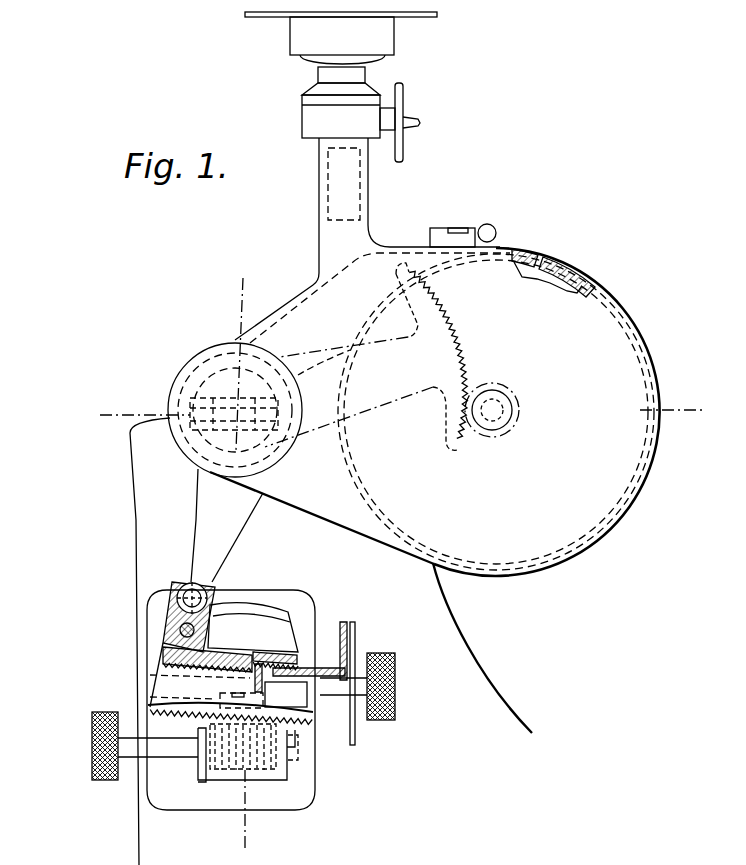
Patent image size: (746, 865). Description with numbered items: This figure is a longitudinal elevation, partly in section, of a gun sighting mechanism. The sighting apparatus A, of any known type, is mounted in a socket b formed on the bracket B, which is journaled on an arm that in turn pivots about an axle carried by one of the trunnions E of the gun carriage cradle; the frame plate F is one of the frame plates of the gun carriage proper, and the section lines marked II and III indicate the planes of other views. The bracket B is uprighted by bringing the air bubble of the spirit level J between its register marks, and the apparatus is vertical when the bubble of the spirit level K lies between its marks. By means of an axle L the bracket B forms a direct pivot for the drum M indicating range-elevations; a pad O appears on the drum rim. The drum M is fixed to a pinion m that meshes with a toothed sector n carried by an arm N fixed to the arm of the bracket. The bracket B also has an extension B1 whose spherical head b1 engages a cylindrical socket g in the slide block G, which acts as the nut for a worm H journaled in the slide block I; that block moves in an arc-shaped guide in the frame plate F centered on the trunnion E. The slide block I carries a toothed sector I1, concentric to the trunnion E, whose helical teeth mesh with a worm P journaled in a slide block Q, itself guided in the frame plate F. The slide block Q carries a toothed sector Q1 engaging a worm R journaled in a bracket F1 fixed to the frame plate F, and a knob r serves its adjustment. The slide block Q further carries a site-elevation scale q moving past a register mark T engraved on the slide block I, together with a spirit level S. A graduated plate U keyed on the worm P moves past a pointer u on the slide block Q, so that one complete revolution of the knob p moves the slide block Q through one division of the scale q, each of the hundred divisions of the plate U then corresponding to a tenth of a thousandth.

The sighting apparatus A is at (306, 119).
The socket b is at (323, 175).
The bracket B is at (363, 240).
The trunnion E is at (197, 375).
The section line II is at (217, 564).
The section line III is at (402, 399).
The toothed sector n is at (452, 340).
The arm N is at (398, 394).
The axle L is at (491, 420).
The pinion m is at (516, 404).
The spirit level K is at (440, 235).
The spirit level J is at (492, 229).
The pad O is at (548, 258).
The drum M is at (587, 274).
The frame plate F is at (142, 833).
The extension B1 is at (201, 517).
The spherical head b1 is at (208, 594).
The cylindrical socket g is at (183, 592).
The slide block G is at (170, 605).
The worm H is at (170, 632).
The slide block I is at (165, 652).
The site-elevation scale q is at (165, 668).
The register mark T is at (240, 652).
The toothed sector I1 is at (273, 654).
The slide block Q is at (160, 684).
The worm R is at (228, 762).
The bracket F1 is at (282, 772).
The spirit level S is at (256, 702).
The hand knob r is at (92, 742).
The toothed sector Q1 is at (170, 728).
The worm P is at (318, 676).
The pointer u is at (352, 624).
The graduated plate U is at (356, 736).
The knob p is at (396, 690).